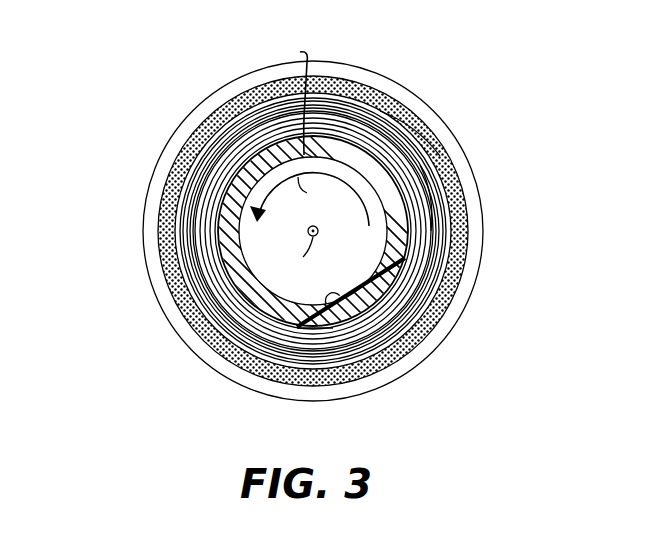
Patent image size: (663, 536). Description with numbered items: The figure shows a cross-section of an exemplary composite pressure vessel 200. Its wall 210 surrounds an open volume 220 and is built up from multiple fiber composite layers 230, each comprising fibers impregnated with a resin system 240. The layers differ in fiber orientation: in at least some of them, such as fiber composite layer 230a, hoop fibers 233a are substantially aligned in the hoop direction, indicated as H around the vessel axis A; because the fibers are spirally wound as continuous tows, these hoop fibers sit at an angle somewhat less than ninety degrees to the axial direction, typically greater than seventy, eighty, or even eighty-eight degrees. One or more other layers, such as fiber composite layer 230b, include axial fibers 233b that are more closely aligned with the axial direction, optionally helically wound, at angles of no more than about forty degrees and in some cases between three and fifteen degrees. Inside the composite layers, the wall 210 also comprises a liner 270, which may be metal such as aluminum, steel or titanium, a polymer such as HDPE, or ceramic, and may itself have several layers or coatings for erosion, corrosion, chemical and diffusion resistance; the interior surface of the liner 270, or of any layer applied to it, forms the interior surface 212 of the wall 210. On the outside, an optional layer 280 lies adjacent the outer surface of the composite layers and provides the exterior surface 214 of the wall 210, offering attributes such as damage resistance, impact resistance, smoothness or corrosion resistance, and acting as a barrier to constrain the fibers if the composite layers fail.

The pressure vessel 200 is at (183, 68).
The wall 210 is at (293, 105).
The interior surface 212 is at (352, 296).
The exterior surface 214 is at (167, 315).
The open volume 220 is at (258, 237).
The fiber composite layers 230 is at (312, 260).
The fiber composite layer 230a is at (202, 188).
The fiber composite layer 230b is at (195, 141).
The hoop fibers 233a is at (443, 193).
The axial fibers 233b is at (430, 131).
The resin system 240 is at (430, 320).
The liner 270 is at (400, 254).
The optional layer 280 is at (383, 70).